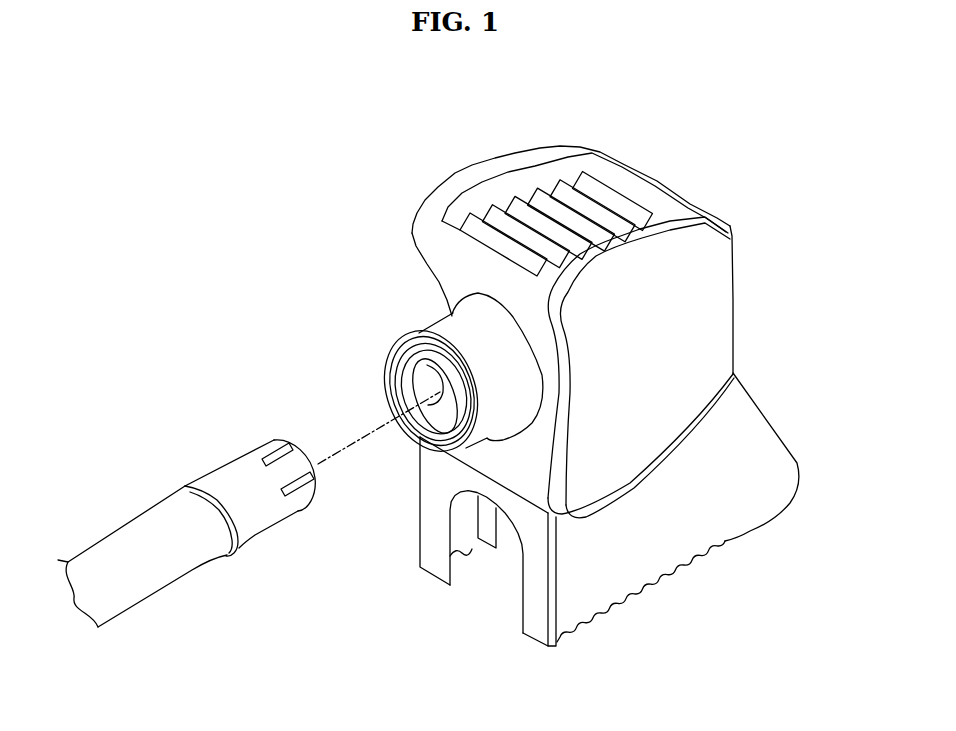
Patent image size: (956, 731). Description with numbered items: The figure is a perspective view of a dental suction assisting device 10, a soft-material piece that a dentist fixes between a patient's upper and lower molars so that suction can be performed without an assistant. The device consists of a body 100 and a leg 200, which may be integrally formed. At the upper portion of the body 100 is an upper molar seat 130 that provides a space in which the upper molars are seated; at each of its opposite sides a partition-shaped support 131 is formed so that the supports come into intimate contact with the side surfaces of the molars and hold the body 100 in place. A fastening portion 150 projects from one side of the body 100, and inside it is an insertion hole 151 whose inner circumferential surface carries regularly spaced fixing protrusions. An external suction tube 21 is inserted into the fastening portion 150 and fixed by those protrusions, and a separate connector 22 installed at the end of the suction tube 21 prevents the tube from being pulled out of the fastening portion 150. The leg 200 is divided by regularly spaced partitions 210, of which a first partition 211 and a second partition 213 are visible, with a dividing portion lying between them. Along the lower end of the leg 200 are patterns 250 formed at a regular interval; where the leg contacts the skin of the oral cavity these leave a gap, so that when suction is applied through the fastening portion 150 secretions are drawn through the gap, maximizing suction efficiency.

The suction assisting device 10 is at (498, 136).
The body 100 is at (712, 318).
The upper molar seat 130 is at (620, 195).
The support 131 is at (557, 173).
The fastening portion 150 is at (442, 326).
The insertion hole 151 is at (393, 373).
The leg 200 is at (743, 437).
The pattern 250 is at (625, 598).
The partition 210 is at (497, 650).
The first partition 211 is at (433, 570).
The second partition 213 is at (483, 553).
The suction tube 21 is at (150, 573).
The connector 22 is at (260, 517).